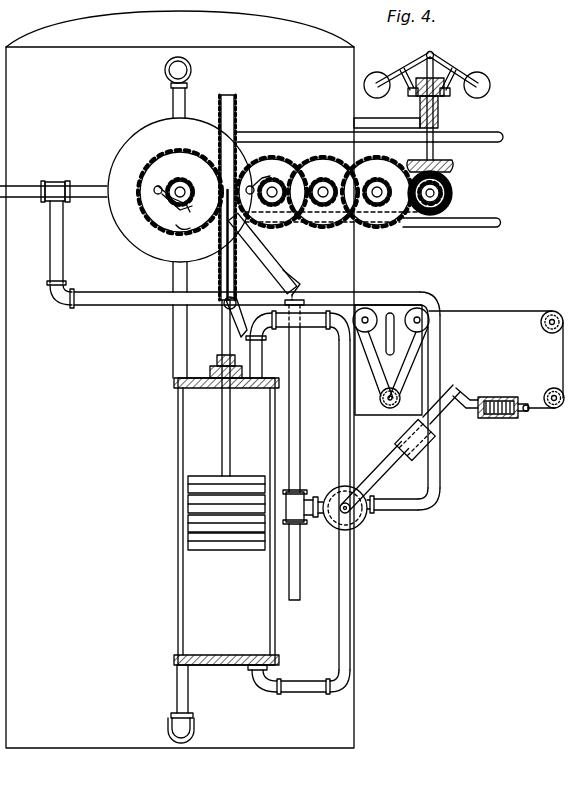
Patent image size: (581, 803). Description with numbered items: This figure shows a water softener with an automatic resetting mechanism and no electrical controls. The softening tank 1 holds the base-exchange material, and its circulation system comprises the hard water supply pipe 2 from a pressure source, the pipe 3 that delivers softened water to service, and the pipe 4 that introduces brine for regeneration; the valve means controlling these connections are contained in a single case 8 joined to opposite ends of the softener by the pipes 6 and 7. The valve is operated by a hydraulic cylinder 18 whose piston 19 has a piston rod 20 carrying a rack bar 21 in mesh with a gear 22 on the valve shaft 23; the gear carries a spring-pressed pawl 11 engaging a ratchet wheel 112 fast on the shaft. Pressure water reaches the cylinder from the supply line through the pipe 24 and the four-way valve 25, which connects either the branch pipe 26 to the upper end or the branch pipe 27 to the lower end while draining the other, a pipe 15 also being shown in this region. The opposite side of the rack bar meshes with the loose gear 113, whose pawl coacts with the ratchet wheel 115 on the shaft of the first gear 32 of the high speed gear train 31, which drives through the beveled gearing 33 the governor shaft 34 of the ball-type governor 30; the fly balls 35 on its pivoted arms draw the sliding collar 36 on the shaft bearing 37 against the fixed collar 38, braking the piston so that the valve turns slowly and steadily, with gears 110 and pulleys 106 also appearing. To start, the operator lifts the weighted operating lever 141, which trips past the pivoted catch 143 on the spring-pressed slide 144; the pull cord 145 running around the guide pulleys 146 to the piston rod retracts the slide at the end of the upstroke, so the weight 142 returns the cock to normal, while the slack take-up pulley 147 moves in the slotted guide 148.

The softening tank 1 is at (18, 58).
The hard water supply pipe 2 is at (27, 198).
The softened water delivery pipe 3 is at (317, 142).
The brine pipe 4 is at (462, 223).
The softener connecting pipe 6 is at (172, 100).
The softener connecting pipe 7 is at (176, 690).
The valve case 8 is at (137, 146).
The pawl 11 is at (164, 217).
The pipe 15 is at (298, 362).
The hydraulic cylinder 18 is at (178, 461).
The piston 19 is at (195, 503).
The piston rod 20 is at (222, 431).
The rack bar 21 is at (238, 114).
The gear 22 is at (152, 163).
The valve shaft 23 is at (166, 186).
The pipe 24 is at (440, 343).
The valve 25 is at (360, 526).
The branch pipe 26 is at (339, 442).
The branch pipe 27 is at (340, 565).
The ball-type governor 30 is at (451, 62).
The high speed gear train 31 is at (370, 236).
The first gear 32 is at (300, 226).
The beveled gearing 33 is at (452, 182).
The governor shaft 34 is at (441, 154).
The fly balls 35 is at (378, 72).
The sliding collar 36 is at (443, 94).
The shaft bearing 37 is at (439, 128).
The fixed collar 38 is at (417, 68).
The pulleys 106 is at (553, 388).
The gear 110 is at (270, 183).
The ratchet wheel 112 is at (189, 240).
The loose gear 113 is at (247, 226).
The ratchet wheel 115 is at (278, 180).
The weighted operating lever 141 is at (385, 472).
The weight 142 is at (422, 450).
The pivoted catch 143 is at (474, 412).
The slide 144 is at (506, 418).
The pull cord 145 is at (491, 312).
The guide pulleys 146 is at (268, 263).
The slack take-up pulley 147 is at (386, 409).
The slotted guide 148 is at (397, 355).